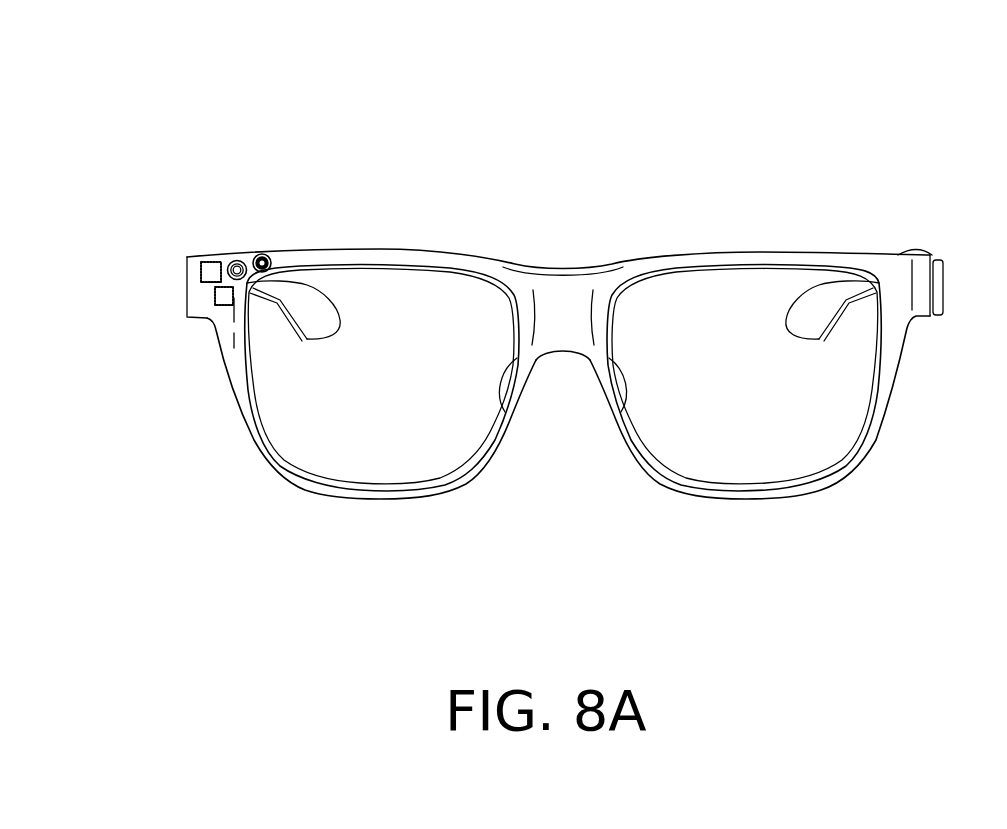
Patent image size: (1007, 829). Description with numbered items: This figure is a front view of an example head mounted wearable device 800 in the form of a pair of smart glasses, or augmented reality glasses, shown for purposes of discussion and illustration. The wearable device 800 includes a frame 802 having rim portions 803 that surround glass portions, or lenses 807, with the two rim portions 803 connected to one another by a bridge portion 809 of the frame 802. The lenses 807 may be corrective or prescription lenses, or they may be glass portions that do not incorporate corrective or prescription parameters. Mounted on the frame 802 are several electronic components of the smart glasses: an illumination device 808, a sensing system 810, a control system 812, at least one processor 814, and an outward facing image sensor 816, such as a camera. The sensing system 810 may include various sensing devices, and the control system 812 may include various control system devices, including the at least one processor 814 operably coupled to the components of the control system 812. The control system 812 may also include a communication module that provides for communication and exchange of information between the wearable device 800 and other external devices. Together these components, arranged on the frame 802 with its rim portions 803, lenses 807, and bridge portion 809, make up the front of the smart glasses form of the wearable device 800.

The head mounted wearable device 800 is at (529, 308).
The frame 802 is at (813, 250).
The rim portions 803 is at (287, 479).
The lenses 807 is at (355, 450).
The illumination device 808 is at (265, 254).
The bridge portion 809 is at (558, 296).
The sensing system 810 is at (187, 316).
The control system 812 is at (213, 257).
The processor 814 is at (203, 255).
The outward facing image sensor 816 is at (242, 257).